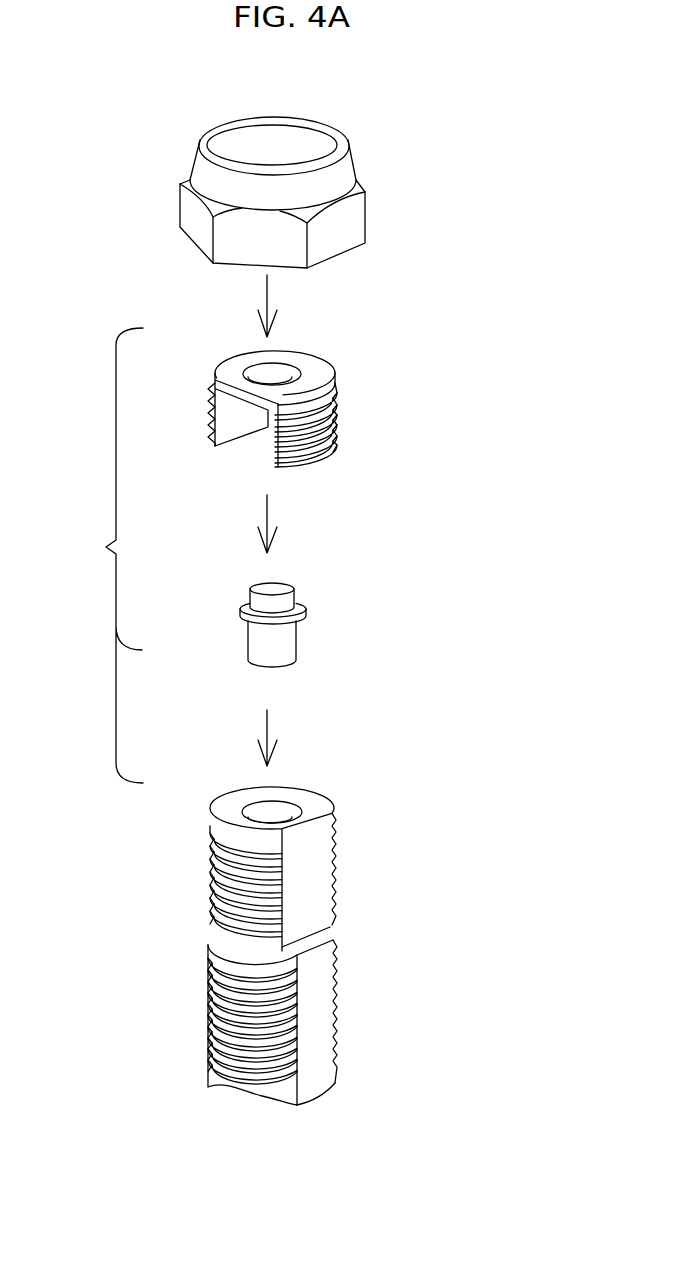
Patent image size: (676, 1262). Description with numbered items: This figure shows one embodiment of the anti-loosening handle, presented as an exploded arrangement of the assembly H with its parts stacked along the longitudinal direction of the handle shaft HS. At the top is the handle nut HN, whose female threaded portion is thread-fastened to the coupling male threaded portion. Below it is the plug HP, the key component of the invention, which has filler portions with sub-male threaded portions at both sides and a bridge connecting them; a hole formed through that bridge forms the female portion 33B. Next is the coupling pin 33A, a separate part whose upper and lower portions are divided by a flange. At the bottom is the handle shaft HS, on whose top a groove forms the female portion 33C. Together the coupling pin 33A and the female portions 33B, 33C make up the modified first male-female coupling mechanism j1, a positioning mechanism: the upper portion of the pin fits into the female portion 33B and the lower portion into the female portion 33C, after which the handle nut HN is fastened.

The hex assembly H is at (138, 127).
The handle nut HN is at (386, 142).
The plug HP is at (390, 446).
The handle shaft HS is at (374, 978).
The coupling pin 33A is at (260, 642).
The female portion 33B is at (268, 384).
The female portion 33C is at (279, 812).
The modified first male-female coupling mechanism j1 is at (108, 555).